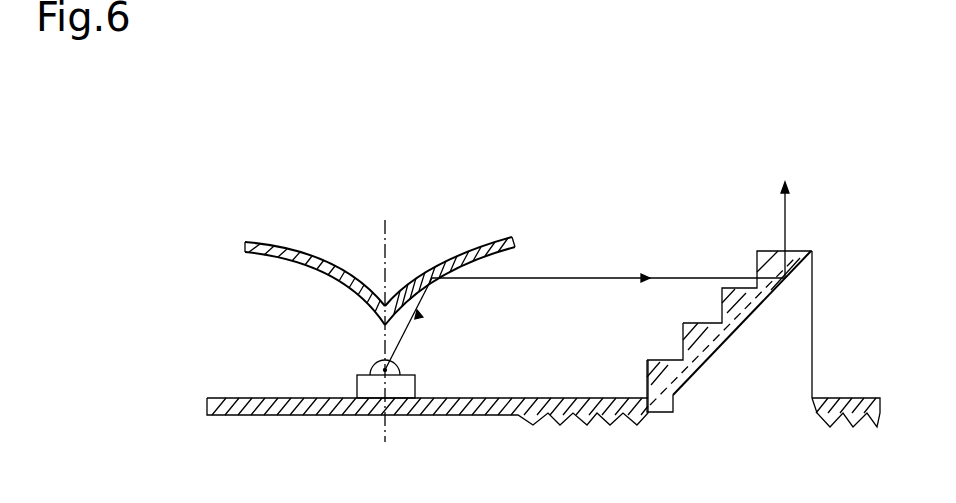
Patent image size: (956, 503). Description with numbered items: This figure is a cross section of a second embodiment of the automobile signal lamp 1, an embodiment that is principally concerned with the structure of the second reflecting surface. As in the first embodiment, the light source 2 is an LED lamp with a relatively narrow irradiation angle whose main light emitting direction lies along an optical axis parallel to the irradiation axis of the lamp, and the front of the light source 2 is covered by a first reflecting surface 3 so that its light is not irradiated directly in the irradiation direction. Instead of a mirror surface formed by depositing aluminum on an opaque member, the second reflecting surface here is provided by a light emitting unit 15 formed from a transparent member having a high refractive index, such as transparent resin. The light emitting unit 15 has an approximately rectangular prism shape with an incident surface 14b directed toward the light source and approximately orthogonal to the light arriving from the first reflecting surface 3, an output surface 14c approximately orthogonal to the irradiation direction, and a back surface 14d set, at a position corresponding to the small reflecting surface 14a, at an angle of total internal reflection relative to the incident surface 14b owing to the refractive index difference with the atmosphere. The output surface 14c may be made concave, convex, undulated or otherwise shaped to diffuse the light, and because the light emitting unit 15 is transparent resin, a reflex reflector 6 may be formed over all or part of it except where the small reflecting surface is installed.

The automobile signal lamp 1 is at (290, 215).
The light source 2 is at (363, 383).
The first reflecting surface 3 is at (463, 247).
The reflex reflector 6 is at (598, 428).
The small reflecting surface 14a is at (776, 290).
The incident surface 14b is at (648, 370).
The output surface 14c is at (657, 357).
The back surface 14d is at (713, 358).
The light emitting unit 15 is at (448, 417).